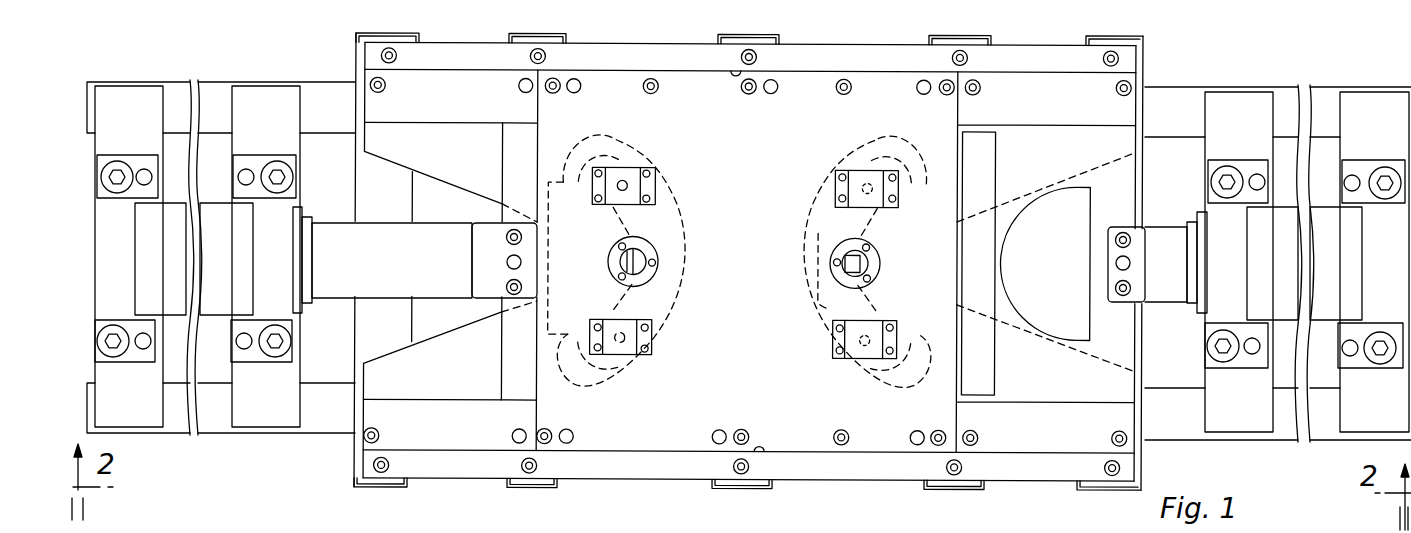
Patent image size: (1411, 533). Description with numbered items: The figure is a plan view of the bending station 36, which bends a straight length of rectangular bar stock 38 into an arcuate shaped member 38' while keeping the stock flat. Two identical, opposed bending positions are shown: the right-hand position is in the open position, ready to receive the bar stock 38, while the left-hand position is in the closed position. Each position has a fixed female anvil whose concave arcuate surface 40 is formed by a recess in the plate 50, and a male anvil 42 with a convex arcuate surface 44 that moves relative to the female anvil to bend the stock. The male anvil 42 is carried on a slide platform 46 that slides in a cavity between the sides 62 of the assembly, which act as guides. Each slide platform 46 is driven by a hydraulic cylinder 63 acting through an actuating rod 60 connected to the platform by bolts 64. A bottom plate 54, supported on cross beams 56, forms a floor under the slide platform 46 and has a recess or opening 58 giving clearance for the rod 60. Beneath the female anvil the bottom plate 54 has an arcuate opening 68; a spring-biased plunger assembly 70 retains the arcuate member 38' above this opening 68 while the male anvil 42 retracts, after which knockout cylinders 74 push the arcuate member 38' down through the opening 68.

The bending station 36 is at (1336, 77).
The rectangular bar stock 38 is at (1046, 262).
The arcuate shaped member 38' is at (744, 261).
The concave arcuate surface 40 is at (820, 217).
The male anvil 42 is at (543, 187).
The convex arcuate surface 44 is at (612, 305).
The slide platform 46 is at (510, 374).
The plate 50 is at (800, 422).
The bottom plate 54 is at (425, 147).
The cross beams 56 is at (355, 178).
The recess or opening 58 is at (437, 333).
The actuating rod 60 is at (380, 248).
The sides 62 is at (610, 57).
The hydraulic cylinder 63 is at (213, 287).
The bolts 64 is at (508, 286).
The arcuate opening 68 is at (673, 309).
The spring-biased plunger assembly 70 is at (657, 253).
The knockout cylinder 74 is at (622, 175).